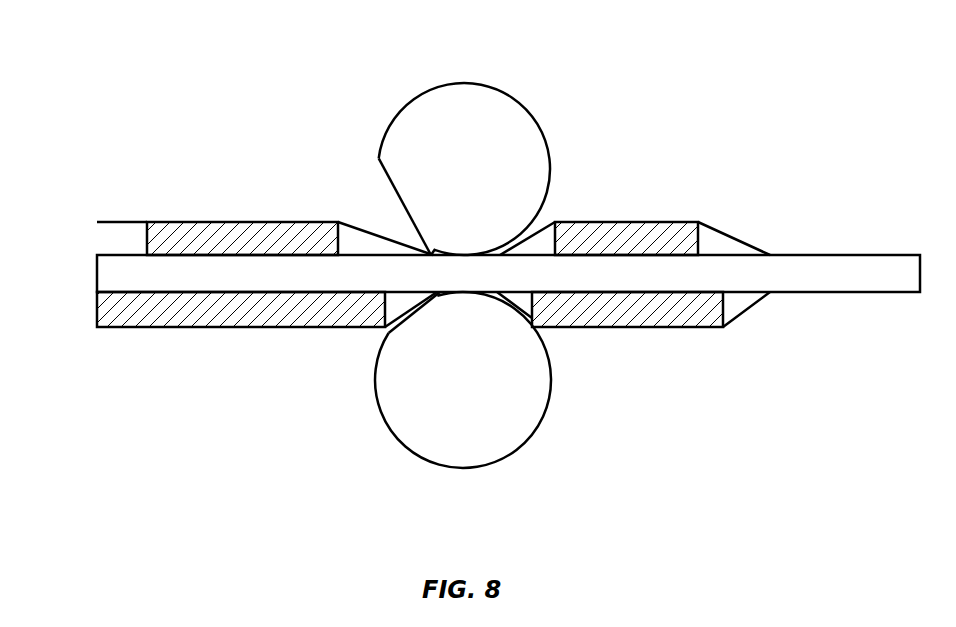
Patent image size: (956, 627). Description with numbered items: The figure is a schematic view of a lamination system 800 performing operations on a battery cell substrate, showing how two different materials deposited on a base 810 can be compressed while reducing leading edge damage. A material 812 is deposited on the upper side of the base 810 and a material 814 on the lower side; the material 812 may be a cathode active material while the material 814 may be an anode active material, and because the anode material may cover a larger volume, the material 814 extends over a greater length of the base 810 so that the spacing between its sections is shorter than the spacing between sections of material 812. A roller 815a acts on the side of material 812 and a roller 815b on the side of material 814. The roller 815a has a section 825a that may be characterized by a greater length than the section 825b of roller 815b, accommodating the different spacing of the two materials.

The lamination system 800 is at (200, 89).
The base 810 is at (820, 255).
The material 812 is at (146, 235).
The material 814 is at (97, 312).
The roller 815a is at (542, 127).
The roller 815b is at (398, 443).
The section 825a is at (398, 193).
The section 825b is at (415, 308).